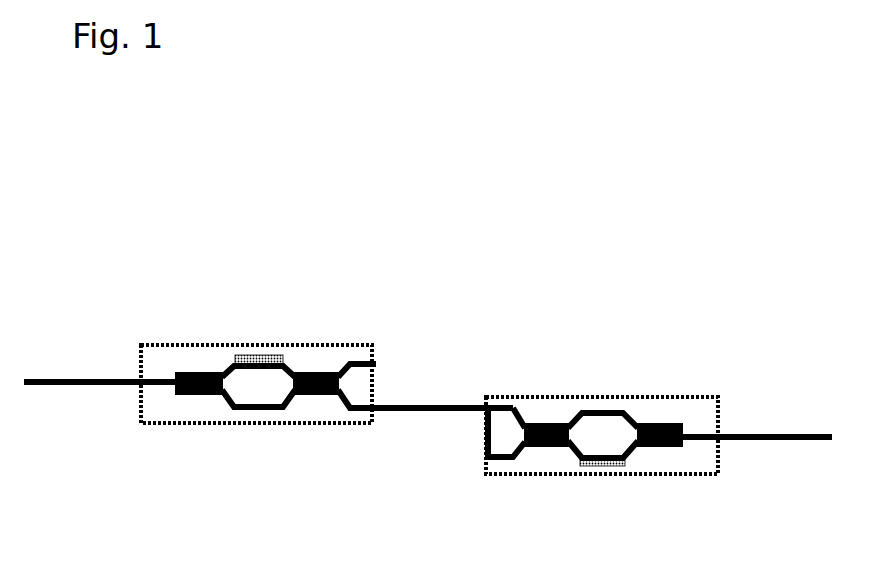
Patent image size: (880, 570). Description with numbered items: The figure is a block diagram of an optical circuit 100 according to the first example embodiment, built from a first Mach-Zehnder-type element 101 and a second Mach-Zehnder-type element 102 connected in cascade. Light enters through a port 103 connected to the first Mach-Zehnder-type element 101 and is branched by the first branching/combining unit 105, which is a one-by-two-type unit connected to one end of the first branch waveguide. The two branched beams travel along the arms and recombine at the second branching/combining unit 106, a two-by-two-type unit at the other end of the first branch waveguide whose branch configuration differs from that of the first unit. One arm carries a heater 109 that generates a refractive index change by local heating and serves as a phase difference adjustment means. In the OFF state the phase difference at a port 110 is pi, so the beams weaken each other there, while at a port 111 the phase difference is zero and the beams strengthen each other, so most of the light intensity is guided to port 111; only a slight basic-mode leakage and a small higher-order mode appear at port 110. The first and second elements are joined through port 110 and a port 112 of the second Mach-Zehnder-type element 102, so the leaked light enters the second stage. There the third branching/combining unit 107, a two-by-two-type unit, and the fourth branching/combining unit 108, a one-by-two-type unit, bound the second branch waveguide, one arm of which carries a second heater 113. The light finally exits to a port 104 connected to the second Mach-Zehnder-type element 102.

The optical circuit 100 is at (494, 198).
The first Mach-Zehnder-type element 101 is at (168, 343).
The second Mach-Zehnder-type element 102 is at (658, 397).
The port 103 is at (40, 386).
The port 104 is at (817, 443).
The first branching/combining unit 105 is at (195, 396).
The second branching/combining unit 106 is at (312, 397).
The third branching/combining unit 107 is at (538, 448).
The fourth branching/combining unit 108 is at (652, 448).
The heater 109 is at (265, 355).
The port 110 is at (375, 410).
The port 111 is at (377, 362).
The port 112 is at (486, 406).
The heater 113 is at (597, 466).